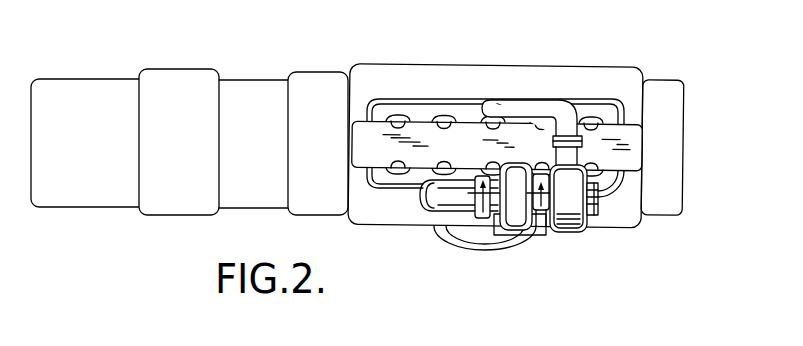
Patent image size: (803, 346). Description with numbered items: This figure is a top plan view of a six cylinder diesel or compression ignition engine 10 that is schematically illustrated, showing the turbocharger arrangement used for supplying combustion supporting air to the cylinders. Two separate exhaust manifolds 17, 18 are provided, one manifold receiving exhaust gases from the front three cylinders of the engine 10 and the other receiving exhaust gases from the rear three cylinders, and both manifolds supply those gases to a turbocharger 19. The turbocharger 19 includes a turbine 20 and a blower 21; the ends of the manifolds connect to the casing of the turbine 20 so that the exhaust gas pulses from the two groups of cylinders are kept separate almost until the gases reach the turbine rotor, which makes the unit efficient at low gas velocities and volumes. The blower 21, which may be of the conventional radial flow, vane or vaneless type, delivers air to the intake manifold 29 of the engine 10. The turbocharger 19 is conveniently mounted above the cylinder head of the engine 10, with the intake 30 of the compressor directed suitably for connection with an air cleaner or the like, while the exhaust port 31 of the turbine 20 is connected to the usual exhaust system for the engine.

The engine 10 is at (457, 57).
The exhaust manifold 17 is at (402, 181).
The exhaust manifold 18 is at (610, 180).
The turbocharger 19 is at (488, 235).
The turbine 20 is at (515, 227).
The blower 21 is at (569, 230).
The intake manifold 29 is at (457, 110).
The intake 30 is at (598, 199).
The exhaust port 31 is at (450, 200).